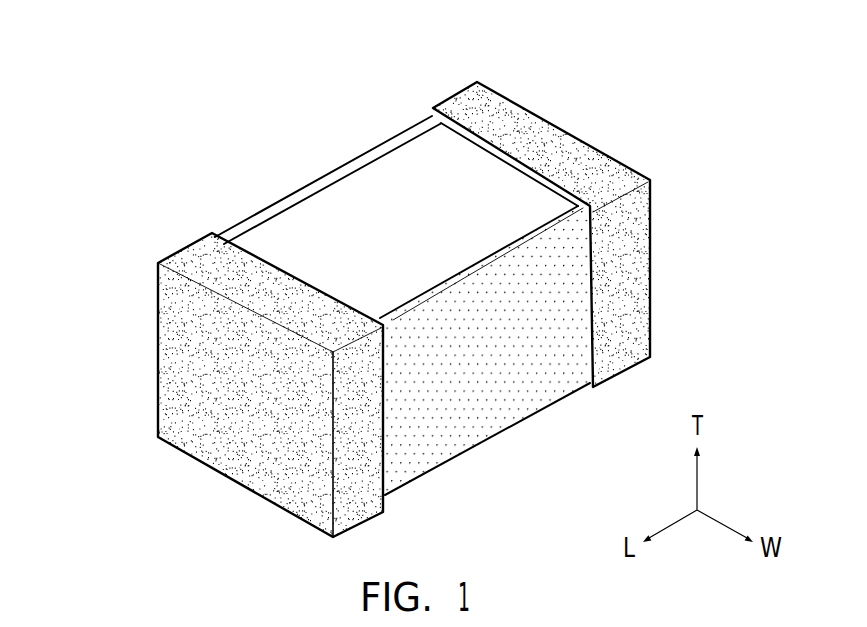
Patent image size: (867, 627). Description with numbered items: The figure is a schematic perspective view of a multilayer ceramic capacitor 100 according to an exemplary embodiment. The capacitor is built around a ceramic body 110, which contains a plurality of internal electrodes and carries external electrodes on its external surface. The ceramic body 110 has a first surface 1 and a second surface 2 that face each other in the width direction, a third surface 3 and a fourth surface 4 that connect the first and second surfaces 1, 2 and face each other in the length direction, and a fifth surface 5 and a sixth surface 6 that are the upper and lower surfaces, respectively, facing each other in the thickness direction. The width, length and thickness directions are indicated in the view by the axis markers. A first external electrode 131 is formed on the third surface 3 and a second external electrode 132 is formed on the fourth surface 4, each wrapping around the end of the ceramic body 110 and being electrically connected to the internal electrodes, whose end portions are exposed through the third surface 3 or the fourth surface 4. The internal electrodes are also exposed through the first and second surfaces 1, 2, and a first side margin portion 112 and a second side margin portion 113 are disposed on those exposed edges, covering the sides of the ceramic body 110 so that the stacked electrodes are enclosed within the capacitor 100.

The multilayer ceramic capacitor 100 is at (201, 40).
The ceramic body 110 is at (365, 192).
The first side margin portion 112 is at (311, 190).
The second side margin portion 113 is at (468, 433).
The first external electrode 131 is at (199, 249).
The second external electrode 132 is at (531, 122).
The first surface 1 is at (284, 240).
The second surface 2 is at (571, 312).
The third surface 3 is at (189, 350).
The fourth surface 4 is at (601, 166).
The fifth surface 5 is at (424, 162).
The sixth surface 6 is at (503, 397).